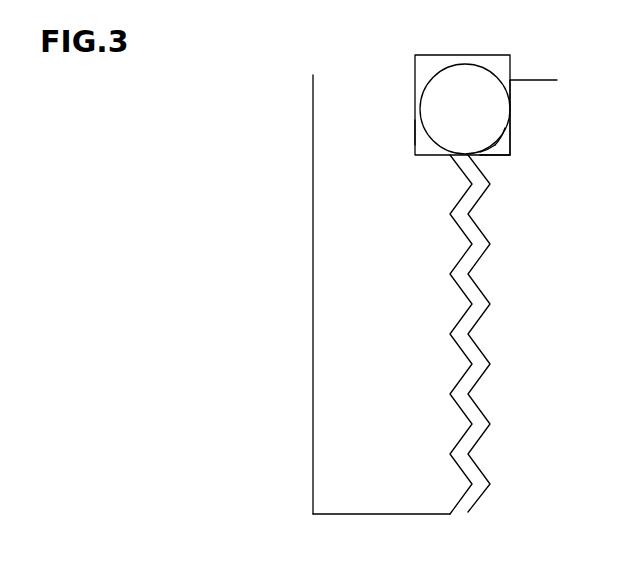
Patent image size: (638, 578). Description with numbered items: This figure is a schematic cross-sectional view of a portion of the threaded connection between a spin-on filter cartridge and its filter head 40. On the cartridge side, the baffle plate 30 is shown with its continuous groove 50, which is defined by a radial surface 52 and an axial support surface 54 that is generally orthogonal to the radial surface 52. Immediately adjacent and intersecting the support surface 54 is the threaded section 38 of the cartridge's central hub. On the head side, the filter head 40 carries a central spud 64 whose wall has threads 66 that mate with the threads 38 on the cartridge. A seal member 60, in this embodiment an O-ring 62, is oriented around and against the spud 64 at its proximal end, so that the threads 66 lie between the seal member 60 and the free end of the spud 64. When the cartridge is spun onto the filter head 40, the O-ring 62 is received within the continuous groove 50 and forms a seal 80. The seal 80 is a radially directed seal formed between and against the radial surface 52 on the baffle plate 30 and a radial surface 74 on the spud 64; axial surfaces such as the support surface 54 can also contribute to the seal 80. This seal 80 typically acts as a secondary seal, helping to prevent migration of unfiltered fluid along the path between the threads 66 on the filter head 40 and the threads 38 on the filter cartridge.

The baffle plate 30 is at (470, 360).
The threaded section 38 is at (477, 447).
The filter head 40 is at (327, 243).
The groove 50 is at (498, 153).
The radial surface 52 is at (508, 135).
The axial support surface 54 is at (495, 150).
The seal member 60 is at (442, 82).
The O-ring 62 is at (483, 82).
The central spud 64 is at (343, 330).
The threads 66 is at (453, 448).
The radial surface 74 is at (415, 133).
The seal 80 is at (510, 110).